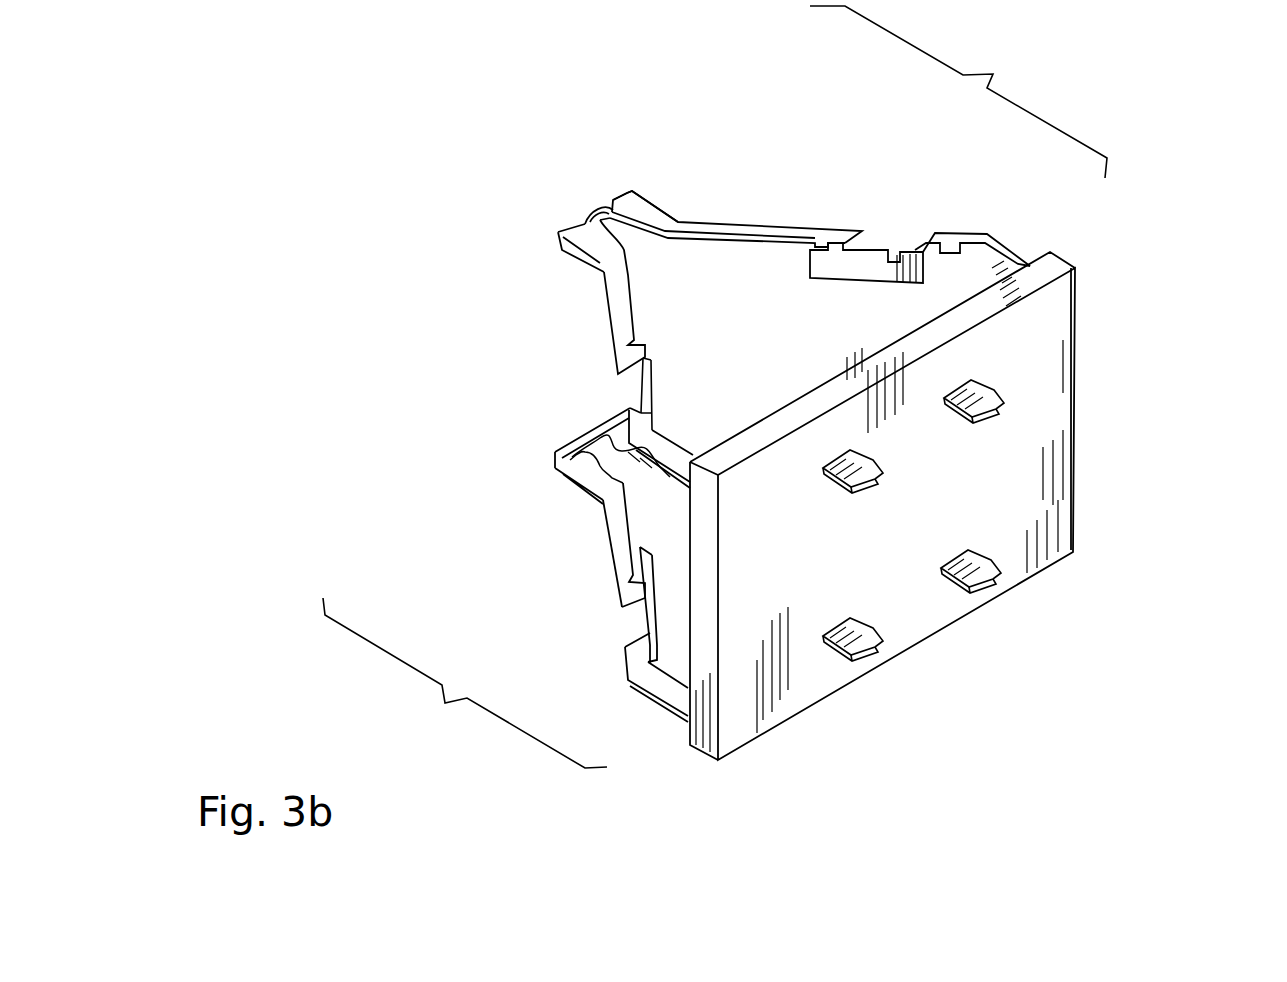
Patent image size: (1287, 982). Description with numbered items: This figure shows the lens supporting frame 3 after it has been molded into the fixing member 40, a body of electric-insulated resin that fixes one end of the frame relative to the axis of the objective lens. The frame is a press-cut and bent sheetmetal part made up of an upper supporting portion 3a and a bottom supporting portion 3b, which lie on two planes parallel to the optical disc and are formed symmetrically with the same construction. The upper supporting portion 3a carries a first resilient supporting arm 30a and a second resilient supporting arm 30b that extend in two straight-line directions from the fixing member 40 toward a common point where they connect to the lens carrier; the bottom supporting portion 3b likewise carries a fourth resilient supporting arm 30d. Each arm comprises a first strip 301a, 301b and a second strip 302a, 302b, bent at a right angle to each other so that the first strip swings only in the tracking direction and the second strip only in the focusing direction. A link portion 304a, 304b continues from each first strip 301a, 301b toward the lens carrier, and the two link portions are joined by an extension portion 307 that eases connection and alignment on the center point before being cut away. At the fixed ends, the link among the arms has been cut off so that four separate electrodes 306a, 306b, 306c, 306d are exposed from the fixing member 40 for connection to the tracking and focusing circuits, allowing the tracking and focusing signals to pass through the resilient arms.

The lens supporting frame 3 is at (692, 392).
The upper supporting portion 3a is at (958, 92).
The bottom supporting portion 3b is at (465, 683).
The first resilient supporting arm 30a is at (811, 186).
The second resilient supporting arm 30b is at (571, 271).
The fourth resilient supporting arm 30d is at (614, 562).
The first strip 301a is at (732, 228).
The first strip 301b is at (647, 312).
The second strip 302a is at (874, 281).
The second strip 302b is at (648, 384).
The link portion 304a is at (645, 213).
The link portion 304b is at (558, 228).
The electrode 306a is at (985, 400).
The electrode 306b is at (853, 467).
The electrode 306c is at (990, 597).
The electrode 306d is at (885, 662).
The extension portion 307 is at (553, 243).
The fixing member 40 is at (974, 536).